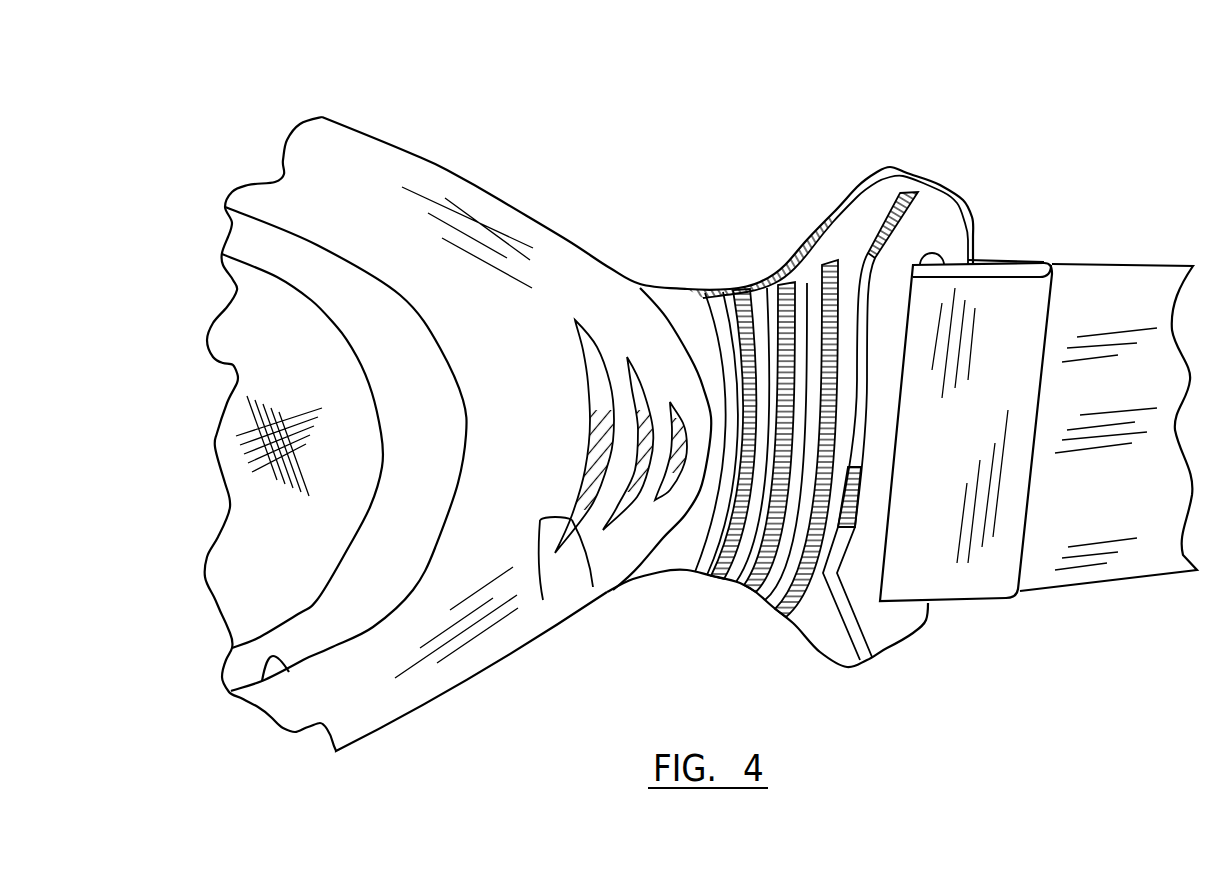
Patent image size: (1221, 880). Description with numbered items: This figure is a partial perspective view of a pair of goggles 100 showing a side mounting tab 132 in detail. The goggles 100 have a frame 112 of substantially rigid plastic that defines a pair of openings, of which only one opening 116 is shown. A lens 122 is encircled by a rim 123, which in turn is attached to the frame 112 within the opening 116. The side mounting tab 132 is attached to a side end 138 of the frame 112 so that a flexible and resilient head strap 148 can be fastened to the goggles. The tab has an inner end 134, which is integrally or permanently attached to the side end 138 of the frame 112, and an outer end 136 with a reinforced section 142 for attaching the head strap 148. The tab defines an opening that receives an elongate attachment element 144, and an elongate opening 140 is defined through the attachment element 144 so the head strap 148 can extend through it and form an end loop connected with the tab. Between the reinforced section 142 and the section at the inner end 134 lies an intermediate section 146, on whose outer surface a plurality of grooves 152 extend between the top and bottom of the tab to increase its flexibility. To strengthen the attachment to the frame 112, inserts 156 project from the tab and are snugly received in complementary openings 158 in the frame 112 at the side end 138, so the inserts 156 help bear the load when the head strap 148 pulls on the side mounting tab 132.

The goggles 100 is at (566, 117).
The frame 112 is at (483, 188).
The opening 116 is at (263, 678).
The lens 122 is at (318, 538).
The rim 123 is at (313, 270).
The side mounting tab 132 is at (838, 224).
The inner end 134 is at (633, 280).
The outer end 136 is at (970, 243).
The side end 138 is at (637, 327).
The elongate opening 140 is at (933, 256).
The reinforced section 142 is at (883, 172).
The elongate attachment element 144 is at (957, 240).
The intermediate section 146 is at (757, 283).
The head strap 148 is at (1120, 264).
The grooves 152 is at (805, 288).
The inserts 156 is at (593, 587).
The complementary openings 158 is at (543, 600).